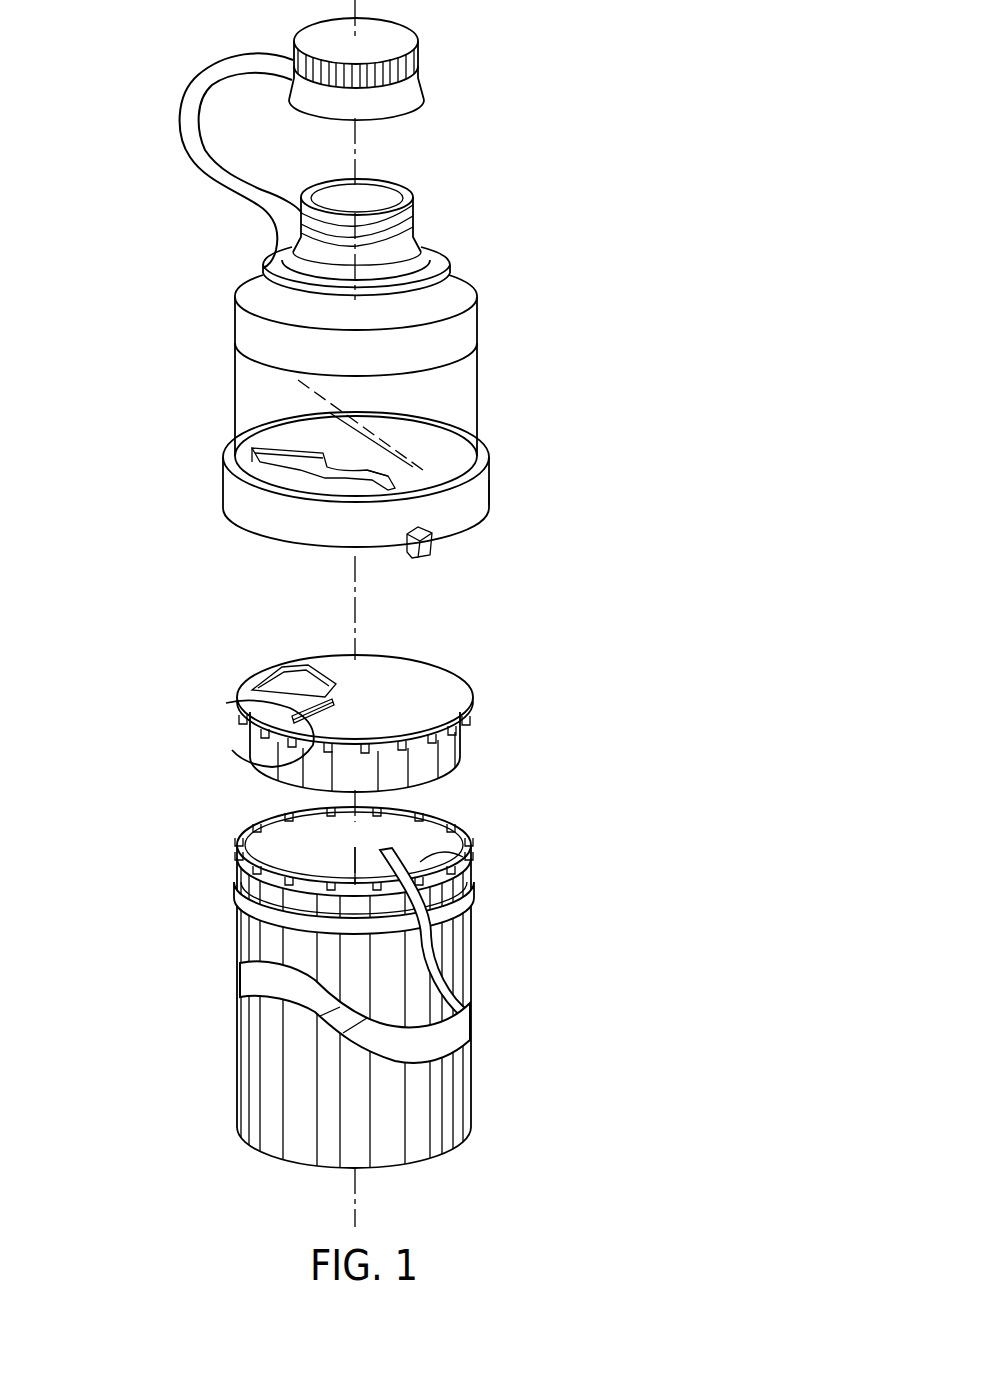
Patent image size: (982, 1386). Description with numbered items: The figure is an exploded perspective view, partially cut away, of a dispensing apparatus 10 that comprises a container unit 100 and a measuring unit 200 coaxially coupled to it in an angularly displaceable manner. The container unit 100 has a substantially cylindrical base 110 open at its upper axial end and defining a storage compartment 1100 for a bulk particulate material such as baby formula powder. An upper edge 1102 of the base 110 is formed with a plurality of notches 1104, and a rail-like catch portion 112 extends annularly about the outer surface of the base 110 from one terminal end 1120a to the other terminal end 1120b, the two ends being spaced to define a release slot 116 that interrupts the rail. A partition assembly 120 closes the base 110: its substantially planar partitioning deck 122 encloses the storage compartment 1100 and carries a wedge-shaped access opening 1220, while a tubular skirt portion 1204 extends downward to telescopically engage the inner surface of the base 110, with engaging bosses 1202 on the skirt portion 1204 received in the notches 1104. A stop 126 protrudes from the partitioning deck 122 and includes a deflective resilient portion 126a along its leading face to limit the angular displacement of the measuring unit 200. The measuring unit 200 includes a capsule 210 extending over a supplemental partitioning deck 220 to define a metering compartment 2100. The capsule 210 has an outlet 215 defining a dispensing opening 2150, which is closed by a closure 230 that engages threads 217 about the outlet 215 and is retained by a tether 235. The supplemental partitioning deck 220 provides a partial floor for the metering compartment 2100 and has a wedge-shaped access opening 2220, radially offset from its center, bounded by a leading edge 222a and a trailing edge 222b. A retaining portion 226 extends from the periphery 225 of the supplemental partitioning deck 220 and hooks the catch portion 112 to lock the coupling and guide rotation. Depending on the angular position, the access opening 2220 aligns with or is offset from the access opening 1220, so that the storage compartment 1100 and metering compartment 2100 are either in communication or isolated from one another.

The dispensing apparatus 10 is at (615, 163).
The container unit 100 is at (619, 991).
The base 110 is at (369, 987).
The catch portion 112 is at (238, 903).
The release slot 116 is at (374, 852).
The storage compartment 1100 is at (369, 853).
The upper edge 1102 is at (473, 843).
The notches 1104 is at (247, 850).
The terminal end 1120a is at (435, 1012).
The terminal end 1120b is at (430, 943).
The partition assembly 120 is at (361, 708).
The partitioning deck 122 is at (388, 683).
The engaging bosses 1202 is at (440, 740).
The skirt portion 1204 is at (440, 767).
The access opening 1220 is at (280, 678).
The stop 126 is at (238, 766).
The resilient portion 126a is at (226, 705).
The measuring unit 200 is at (546, 388).
The capsule 210 is at (460, 333).
The metering compartment 2100 is at (247, 393).
The outlet 215 is at (407, 197).
The dispensing opening 2150 is at (367, 200).
The threads 217 is at (413, 220).
The supplemental partitioning deck 220 is at (457, 458).
The access opening 2220 is at (300, 477).
The leading edge 222a is at (270, 452).
The trailing edge 222b is at (381, 481).
The periphery 225 is at (473, 503).
The retaining portion 226 is at (430, 556).
The closure 230 is at (403, 36).
The tether 235 is at (190, 107).